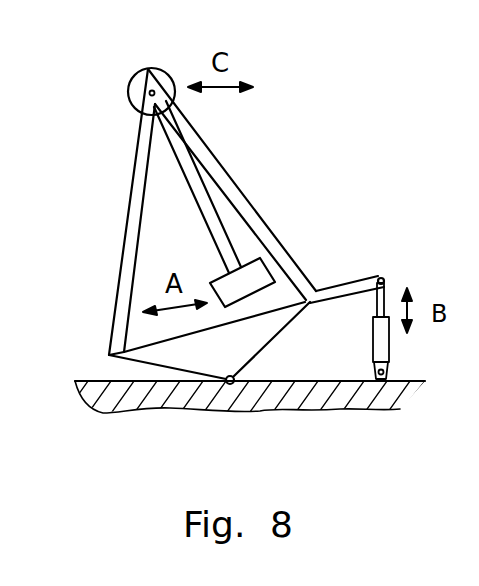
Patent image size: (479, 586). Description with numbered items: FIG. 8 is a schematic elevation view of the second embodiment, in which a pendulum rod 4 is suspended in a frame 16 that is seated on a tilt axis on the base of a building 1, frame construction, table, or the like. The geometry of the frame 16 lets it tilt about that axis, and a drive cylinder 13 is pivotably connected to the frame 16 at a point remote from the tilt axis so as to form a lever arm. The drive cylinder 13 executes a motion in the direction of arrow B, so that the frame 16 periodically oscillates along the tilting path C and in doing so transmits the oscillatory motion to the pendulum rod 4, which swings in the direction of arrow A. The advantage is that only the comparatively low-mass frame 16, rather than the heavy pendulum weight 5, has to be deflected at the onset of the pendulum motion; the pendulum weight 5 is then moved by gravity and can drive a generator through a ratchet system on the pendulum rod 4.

The building 1 is at (378, 408).
The pendulum rod 4 is at (206, 201).
The pendulum weight 5 is at (258, 276).
The drive cylinder 13 is at (385, 350).
The frame 16 is at (128, 226).